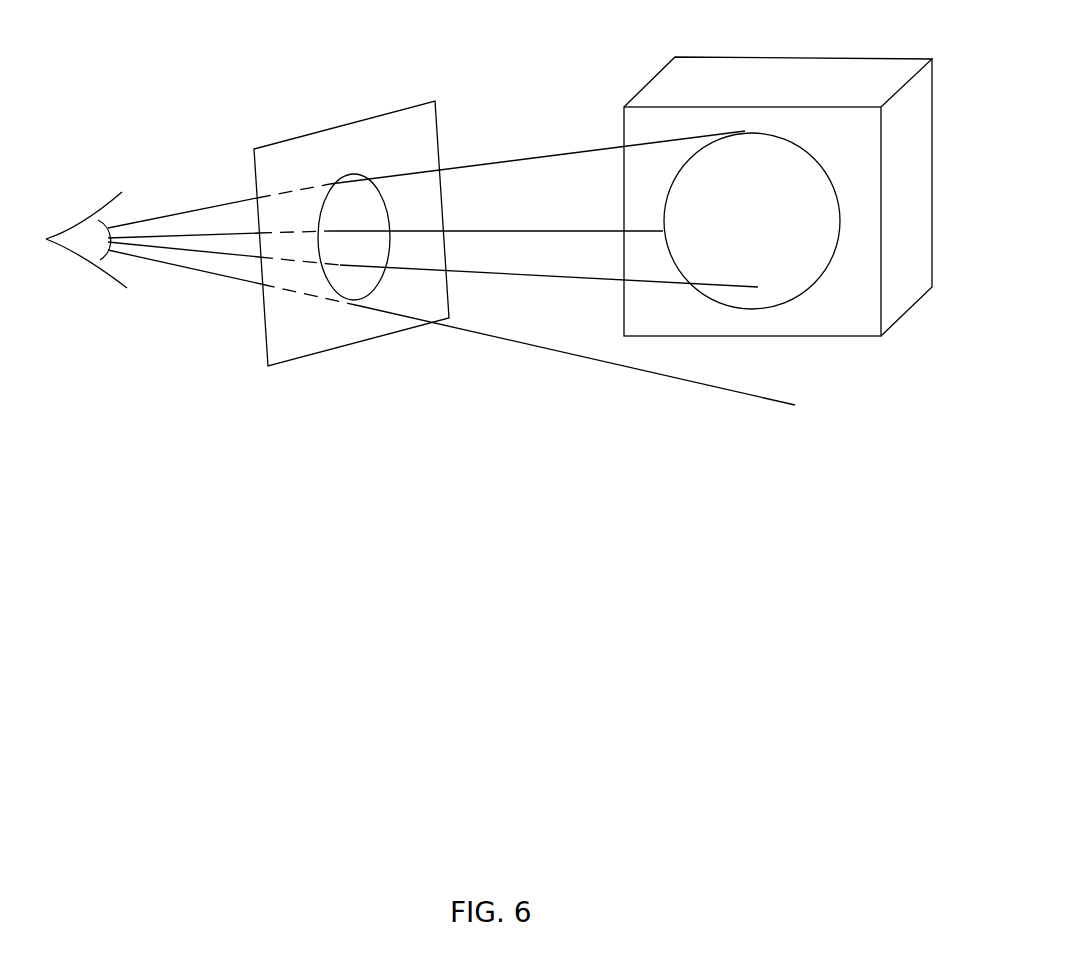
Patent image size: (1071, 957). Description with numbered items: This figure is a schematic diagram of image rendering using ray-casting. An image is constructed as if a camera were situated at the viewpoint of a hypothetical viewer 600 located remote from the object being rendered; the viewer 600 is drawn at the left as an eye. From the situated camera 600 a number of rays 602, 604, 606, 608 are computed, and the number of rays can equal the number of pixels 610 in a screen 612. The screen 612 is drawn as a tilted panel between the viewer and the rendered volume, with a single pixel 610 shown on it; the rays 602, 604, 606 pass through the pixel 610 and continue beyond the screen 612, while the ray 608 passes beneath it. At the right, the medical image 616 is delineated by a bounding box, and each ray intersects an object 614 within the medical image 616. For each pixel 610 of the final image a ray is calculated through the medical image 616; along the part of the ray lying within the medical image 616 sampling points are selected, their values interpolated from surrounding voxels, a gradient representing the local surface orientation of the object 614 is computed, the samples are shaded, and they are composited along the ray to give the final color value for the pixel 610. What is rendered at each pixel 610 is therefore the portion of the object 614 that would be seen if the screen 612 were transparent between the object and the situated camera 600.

The hypothetical viewer 600 is at (85, 253).
The ray 602 is at (523, 155).
The ray 604 is at (532, 230).
The ray 606 is at (550, 277).
The ray 608 is at (543, 348).
The pixel 610 is at (356, 172).
The screen 612 is at (322, 353).
The object 614 is at (827, 163).
The medical image 616 is at (887, 57).